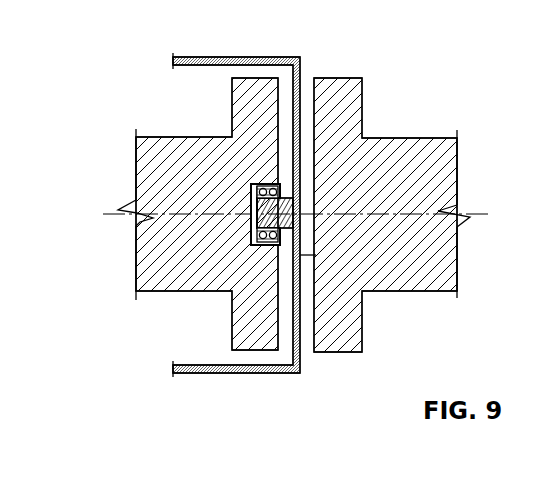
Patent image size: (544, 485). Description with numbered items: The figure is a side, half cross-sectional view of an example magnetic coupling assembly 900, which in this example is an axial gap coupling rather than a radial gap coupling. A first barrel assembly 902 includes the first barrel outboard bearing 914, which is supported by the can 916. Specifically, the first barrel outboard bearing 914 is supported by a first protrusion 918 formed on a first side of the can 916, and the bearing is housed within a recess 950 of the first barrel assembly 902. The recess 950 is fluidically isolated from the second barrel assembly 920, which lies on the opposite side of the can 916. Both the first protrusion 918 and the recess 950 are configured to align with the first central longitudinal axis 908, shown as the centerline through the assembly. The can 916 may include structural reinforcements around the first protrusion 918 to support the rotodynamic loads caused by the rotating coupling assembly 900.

The magnetic coupling assembly 900 is at (124, 43).
The first barrel assembly 902 is at (221, 351).
The first central longitudinal axis 908 is at (112, 216).
The first barrel outboard bearing 914 is at (268, 244).
The can 916 is at (300, 255).
The first protrusion 918 is at (282, 208).
The second barrel assembly 920 is at (375, 97).
The recess 950 is at (252, 208).